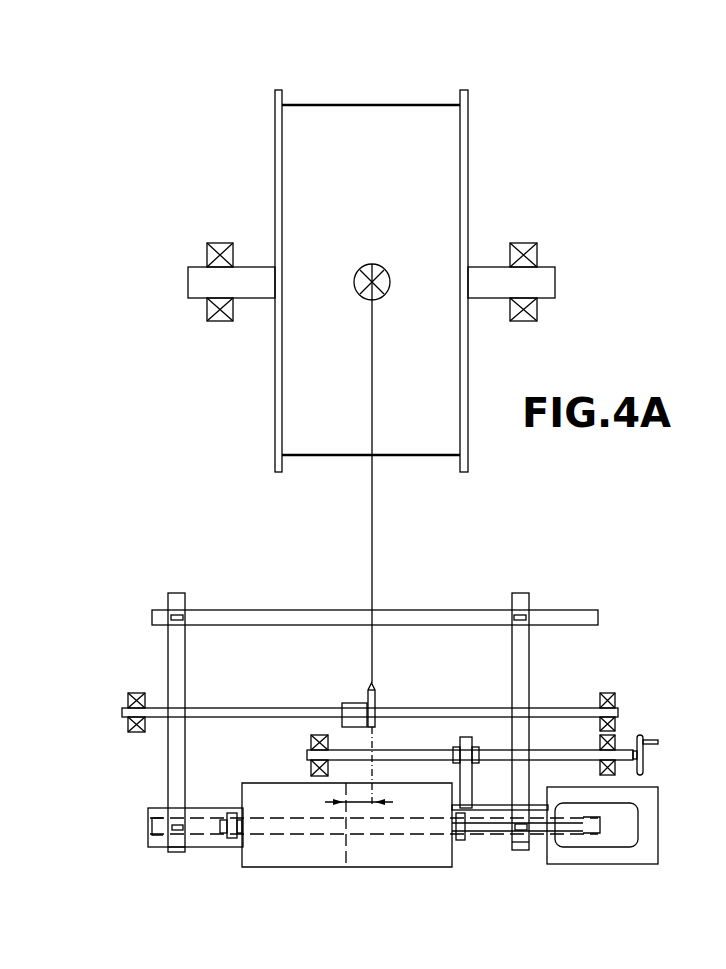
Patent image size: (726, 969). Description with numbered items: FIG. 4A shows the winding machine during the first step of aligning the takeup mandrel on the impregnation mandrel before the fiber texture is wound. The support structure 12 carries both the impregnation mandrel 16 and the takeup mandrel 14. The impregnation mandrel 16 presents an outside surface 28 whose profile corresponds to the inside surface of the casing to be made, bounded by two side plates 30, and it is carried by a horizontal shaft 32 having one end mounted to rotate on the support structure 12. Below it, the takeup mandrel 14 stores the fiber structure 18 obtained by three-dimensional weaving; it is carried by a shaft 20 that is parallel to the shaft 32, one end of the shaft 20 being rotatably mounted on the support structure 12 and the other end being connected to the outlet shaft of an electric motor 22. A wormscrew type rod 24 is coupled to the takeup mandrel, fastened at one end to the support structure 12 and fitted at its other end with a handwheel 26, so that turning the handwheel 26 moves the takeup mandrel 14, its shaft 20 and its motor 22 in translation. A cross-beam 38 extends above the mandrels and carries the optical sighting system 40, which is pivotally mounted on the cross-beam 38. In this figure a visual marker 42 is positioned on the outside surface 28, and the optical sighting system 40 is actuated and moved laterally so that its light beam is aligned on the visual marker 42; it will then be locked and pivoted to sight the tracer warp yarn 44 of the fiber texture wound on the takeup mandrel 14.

The support structure 12 is at (580, 606).
The takeup mandrel 14 is at (430, 855).
The impregnation mandrel 16 is at (397, 438).
The fiber structure 18 is at (283, 857).
The shaft 20 is at (208, 827).
The electric motor 22 is at (654, 837).
The wormscrew type rod 24 is at (546, 757).
The handwheel 26 is at (650, 766).
The outside surface 28 is at (388, 144).
The side plates 30 is at (279, 150).
The shaft 32 is at (548, 280).
The cross-beam 38 is at (457, 712).
The optical sighting system 40 is at (341, 699).
The visual marker 42 is at (372, 268).
The warp yarn 44 is at (346, 843).